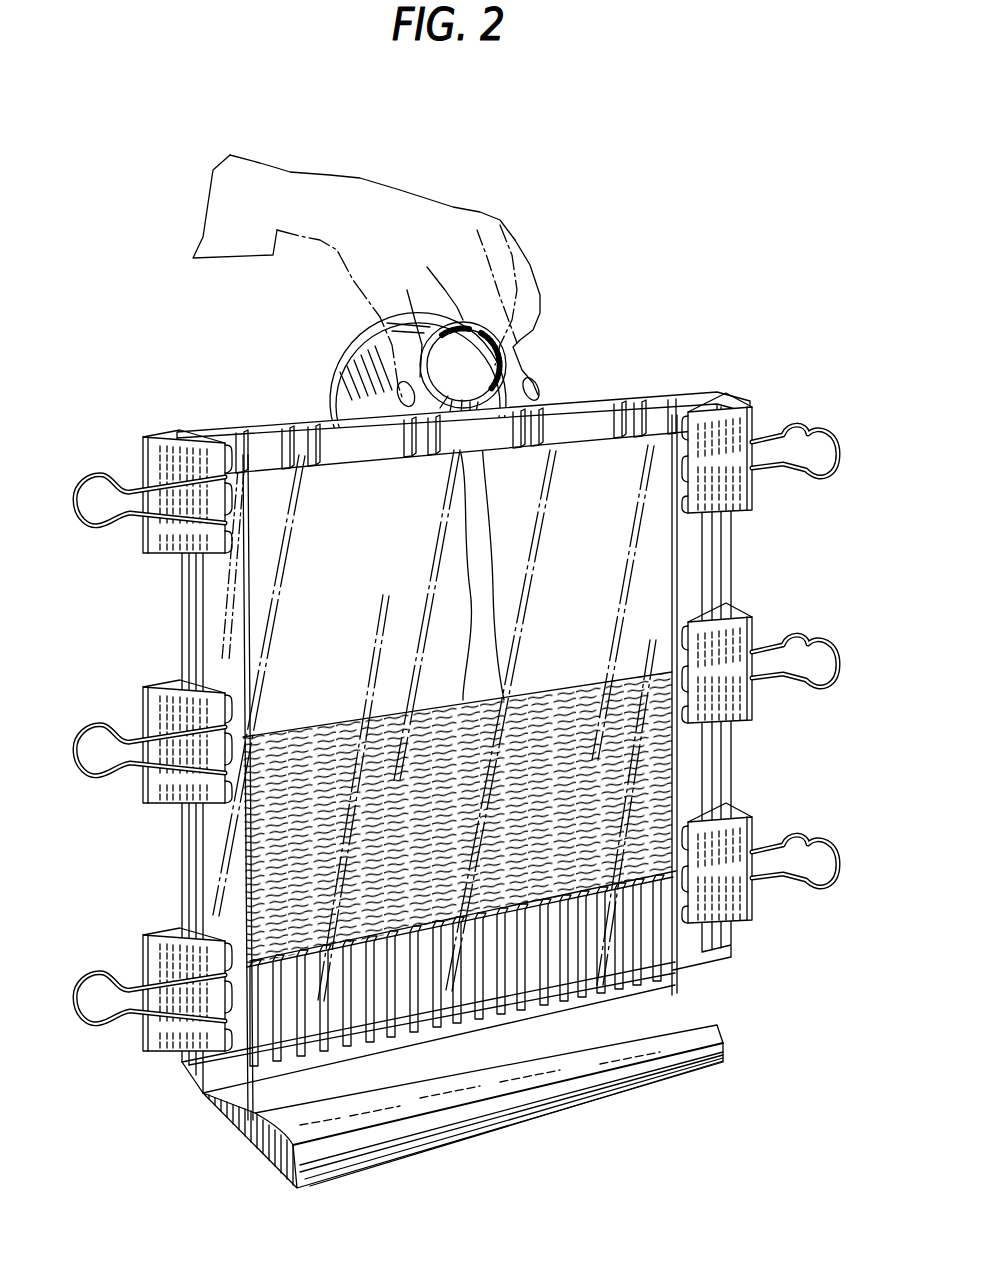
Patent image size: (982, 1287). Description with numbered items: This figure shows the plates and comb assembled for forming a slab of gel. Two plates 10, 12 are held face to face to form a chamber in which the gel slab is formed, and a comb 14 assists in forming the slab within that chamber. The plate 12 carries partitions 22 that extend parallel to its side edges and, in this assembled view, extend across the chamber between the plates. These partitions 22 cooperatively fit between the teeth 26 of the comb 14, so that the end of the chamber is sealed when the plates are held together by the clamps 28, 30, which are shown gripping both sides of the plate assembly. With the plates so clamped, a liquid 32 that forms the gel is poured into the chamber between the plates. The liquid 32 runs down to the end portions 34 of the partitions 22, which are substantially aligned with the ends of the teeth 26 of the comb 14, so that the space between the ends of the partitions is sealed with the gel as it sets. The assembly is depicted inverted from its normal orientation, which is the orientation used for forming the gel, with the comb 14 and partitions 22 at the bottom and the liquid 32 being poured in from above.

The plate 10 is at (324, 497).
The plate 12 is at (642, 397).
The comb 14 is at (688, 1017).
The partitions 22 is at (293, 1025).
The teeth 26 is at (510, 1000).
The clamps 28 is at (160, 470).
The clamps 30 is at (160, 702).
The liquid 32 is at (460, 395).
The end portions 34 is at (453, 925).